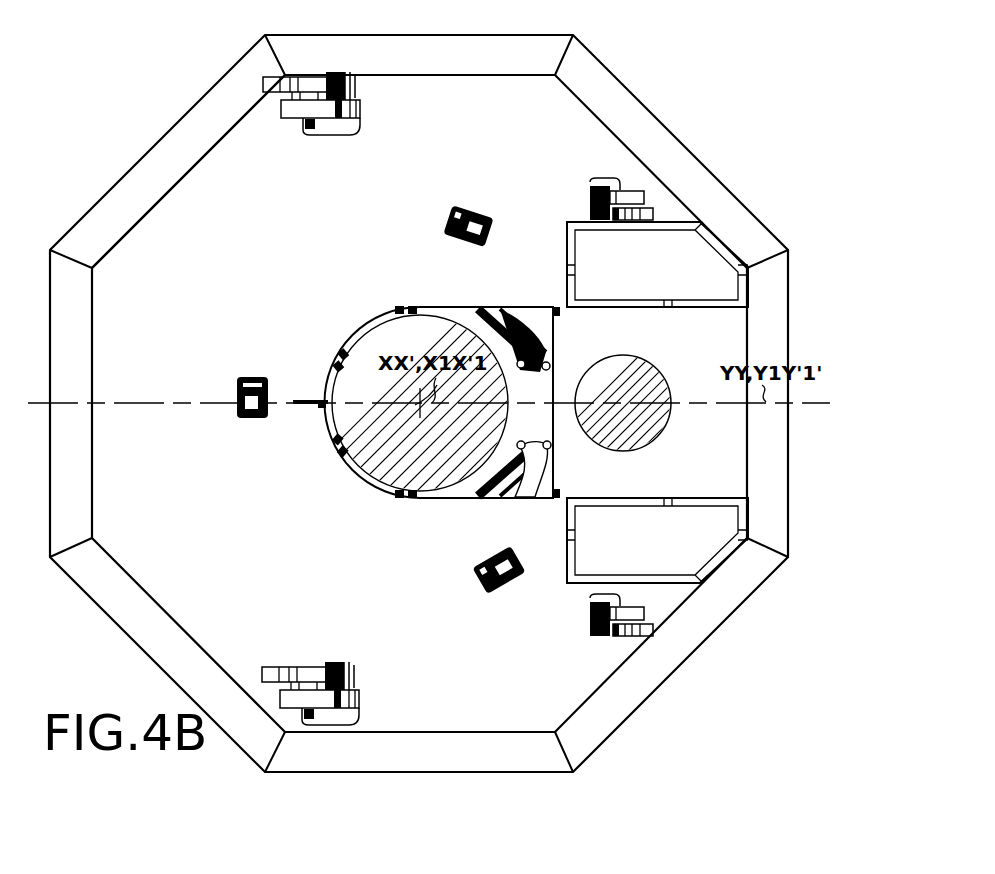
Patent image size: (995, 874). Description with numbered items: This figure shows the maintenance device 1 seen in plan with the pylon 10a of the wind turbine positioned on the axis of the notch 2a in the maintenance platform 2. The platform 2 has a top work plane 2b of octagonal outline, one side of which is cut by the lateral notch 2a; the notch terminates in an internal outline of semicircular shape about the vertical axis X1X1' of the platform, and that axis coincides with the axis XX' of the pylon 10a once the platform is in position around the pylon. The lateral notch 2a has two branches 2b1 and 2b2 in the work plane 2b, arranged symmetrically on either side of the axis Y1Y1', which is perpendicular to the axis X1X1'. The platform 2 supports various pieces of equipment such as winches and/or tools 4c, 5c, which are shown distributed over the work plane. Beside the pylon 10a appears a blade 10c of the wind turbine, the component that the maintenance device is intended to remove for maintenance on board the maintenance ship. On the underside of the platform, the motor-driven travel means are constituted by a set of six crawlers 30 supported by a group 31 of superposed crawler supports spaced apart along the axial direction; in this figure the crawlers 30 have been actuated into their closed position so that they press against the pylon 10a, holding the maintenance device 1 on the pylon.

The maintenance device 1 is at (173, 97).
The maintenance platform 2 is at (128, 188).
The lateral notch 2a is at (695, 405).
The top work plane 2b is at (258, 282).
The branch of the lateral notch 2b1 is at (657, 264).
The branch of the lateral notch 2b2 is at (657, 540).
The tools 4c is at (236, 420).
The tools 5c is at (320, 135).
The pylon 10a is at (428, 485).
The blade 10c is at (645, 398).
The crawlers 30 is at (508, 493).
The group of crawler supports 31 is at (545, 331).